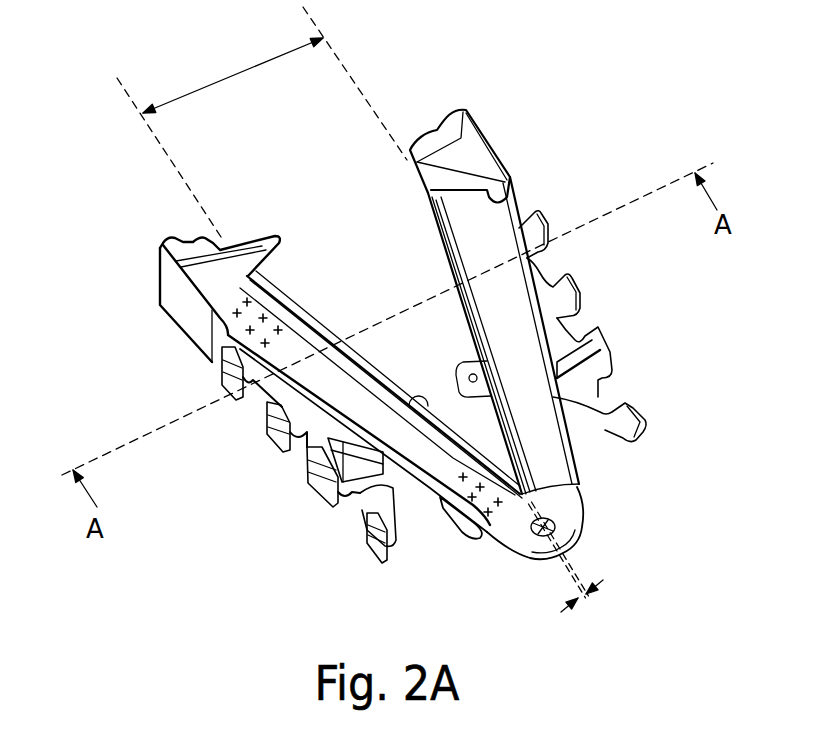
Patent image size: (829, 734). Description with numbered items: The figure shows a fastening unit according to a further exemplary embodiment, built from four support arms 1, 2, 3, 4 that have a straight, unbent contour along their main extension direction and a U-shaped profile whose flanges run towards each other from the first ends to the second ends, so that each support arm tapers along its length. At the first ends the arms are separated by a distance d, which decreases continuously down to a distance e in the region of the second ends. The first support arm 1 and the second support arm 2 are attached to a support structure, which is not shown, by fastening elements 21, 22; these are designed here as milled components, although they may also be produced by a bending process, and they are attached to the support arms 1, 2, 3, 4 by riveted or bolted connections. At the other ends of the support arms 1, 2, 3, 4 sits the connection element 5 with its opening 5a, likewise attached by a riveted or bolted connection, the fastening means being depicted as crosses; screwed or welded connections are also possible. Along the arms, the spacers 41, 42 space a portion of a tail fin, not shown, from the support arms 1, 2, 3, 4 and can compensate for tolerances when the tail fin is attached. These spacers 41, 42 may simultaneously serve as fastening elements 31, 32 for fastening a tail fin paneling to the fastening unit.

The first support arm 1 is at (513, 368).
The second support arm 2 is at (298, 345).
The support arm 3 is at (437, 253).
The support arm 4 is at (427, 502).
The connection element 5 is at (563, 507).
The opening 5a is at (557, 523).
The fastening element 21 is at (460, 170).
The fastening element 22 is at (220, 270).
The fastening element 31 is at (601, 397).
The spacer 41 is at (619, 326).
The fastening element 32 is at (385, 487).
The spacer 42 is at (304, 477).
The distance d is at (240, 72).
The distance e is at (588, 597).